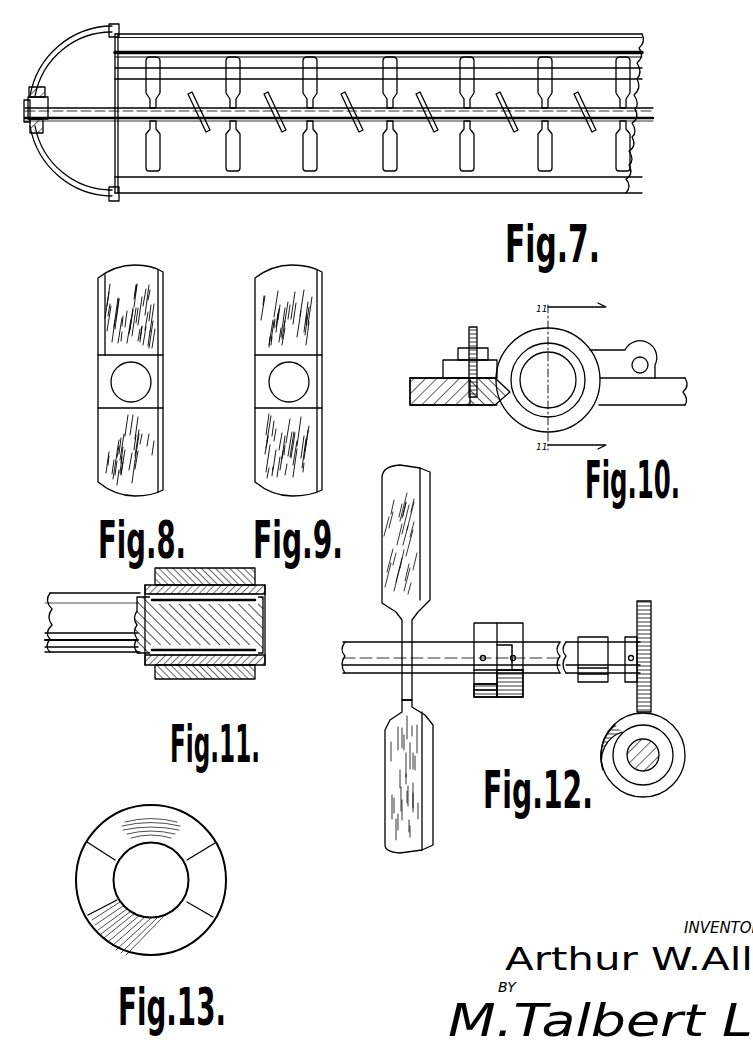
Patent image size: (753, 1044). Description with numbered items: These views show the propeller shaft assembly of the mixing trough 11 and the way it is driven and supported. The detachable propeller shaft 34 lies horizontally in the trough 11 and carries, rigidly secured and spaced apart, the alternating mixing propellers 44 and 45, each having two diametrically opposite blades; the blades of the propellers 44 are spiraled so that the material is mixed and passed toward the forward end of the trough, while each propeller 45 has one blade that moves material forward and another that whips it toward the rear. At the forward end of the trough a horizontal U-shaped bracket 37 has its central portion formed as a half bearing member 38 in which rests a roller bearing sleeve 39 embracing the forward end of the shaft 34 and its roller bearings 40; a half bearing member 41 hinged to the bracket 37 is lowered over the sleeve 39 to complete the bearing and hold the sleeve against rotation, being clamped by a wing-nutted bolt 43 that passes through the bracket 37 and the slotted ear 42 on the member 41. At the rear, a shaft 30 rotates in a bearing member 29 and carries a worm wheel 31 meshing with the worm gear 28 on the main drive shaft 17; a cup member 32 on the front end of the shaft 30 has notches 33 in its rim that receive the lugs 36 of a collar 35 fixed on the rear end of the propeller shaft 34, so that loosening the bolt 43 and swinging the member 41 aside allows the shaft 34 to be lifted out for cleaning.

In FIG. 7, the mixing trough 11 is at (368, 55).
In FIG. 12, the main drive shaft 17 is at (654, 752).
In FIG. 12, the worm gear 28 is at (685, 758).
In FIG. 12, the bearing member 29 is at (592, 640).
In FIG. 12, the shaft 30 is at (546, 656).
In FIG. 12, the worm wheel 31 is at (646, 652).
In FIG. 12, the cup member 32 is at (509, 632).
In FIG. 13, the cup member 32 is at (194, 836).
In FIG. 12, the notches 33 is at (522, 674).
In FIG. 13, the notches 33 is at (84, 882).
In FIG. 7, the propeller shaft 34 is at (650, 112).
In FIG. 10, the propeller shaft 34 is at (568, 395).
In FIG. 11, the propeller shaft 34 is at (82, 605).
In FIG. 12, the propeller shaft 34 is at (370, 652).
In FIG. 12, the collar 35 is at (484, 696).
In FIG. 12, the lugs 36 is at (495, 650).
In FIG. 7, the U-shaped bracket 37 is at (62, 52).
In FIG. 10, the U-shaped bracket 37 is at (686, 396).
In FIG. 10, the half bearing member 38 is at (520, 418).
In FIG. 11, the half bearing member 38 is at (156, 680).
In FIG. 7, the roller bearing sleeve 39 is at (44, 124).
In FIG. 10, the roller bearing sleeve 39 is at (530, 346).
In FIG. 11, the roller bearing sleeve 39 is at (265, 592).
In FIG. 11, the roller bearings 40 is at (262, 649).
In FIG. 7, the half bearing member 41 is at (44, 108).
In FIG. 10, the half bearing member 41 is at (588, 350).
In FIG. 11, the half bearing member 41 is at (220, 577).
In FIG. 10, the slotted ear 42 is at (452, 360).
In FIG. 7, the wing-nutted bolt 43 is at (30, 88).
In FIG. 10, the wing-nutted bolt 43 is at (473, 326).
In FIG. 7, the mixing propellers 44 is at (146, 128).
In FIG. 8, the mixing propellers 44 is at (157, 360).
In FIG. 12, the mixing propellers 44 is at (414, 626).
In FIG. 7, the mixing propellers 45 is at (200, 134).
In FIG. 9, the mixing propellers 45 is at (318, 360).